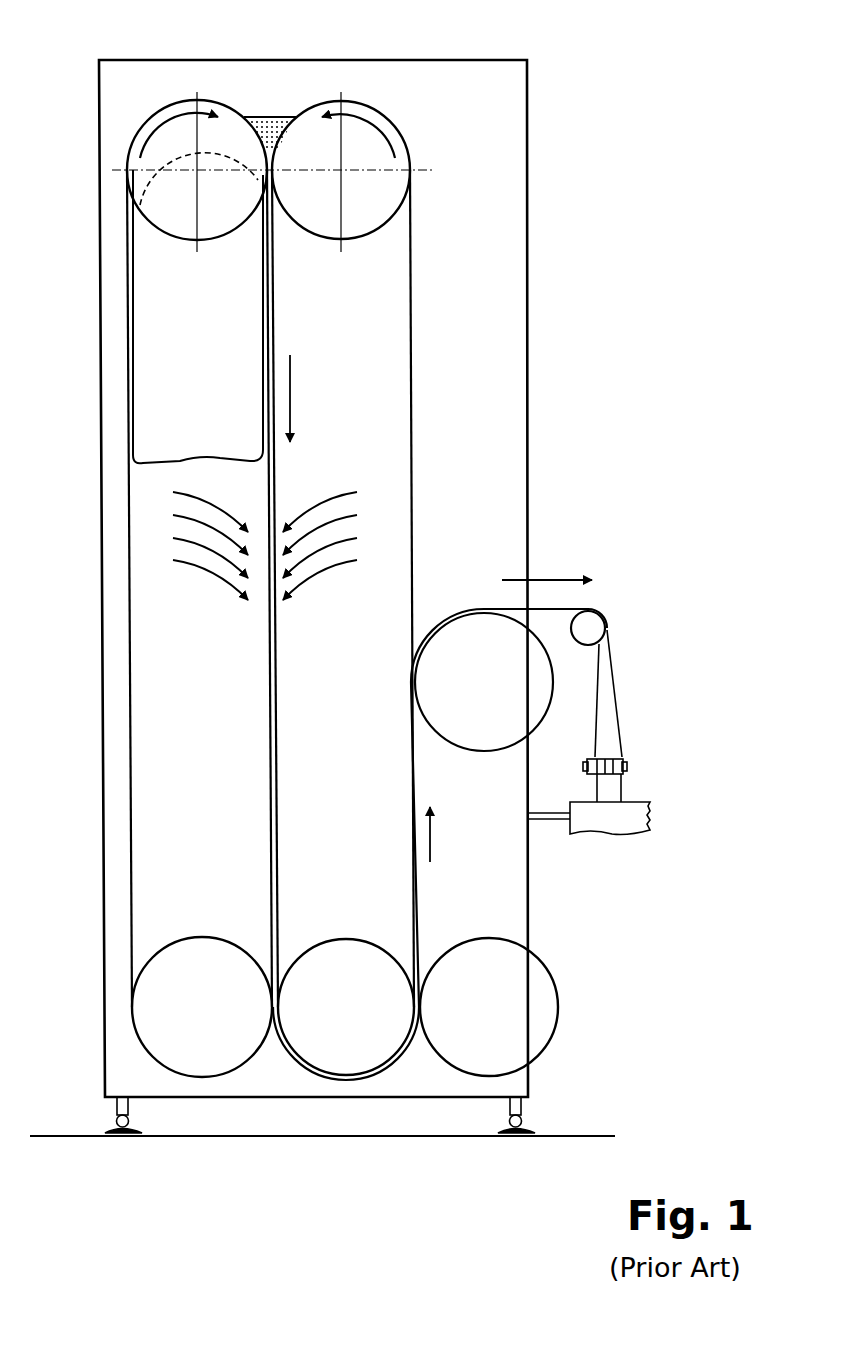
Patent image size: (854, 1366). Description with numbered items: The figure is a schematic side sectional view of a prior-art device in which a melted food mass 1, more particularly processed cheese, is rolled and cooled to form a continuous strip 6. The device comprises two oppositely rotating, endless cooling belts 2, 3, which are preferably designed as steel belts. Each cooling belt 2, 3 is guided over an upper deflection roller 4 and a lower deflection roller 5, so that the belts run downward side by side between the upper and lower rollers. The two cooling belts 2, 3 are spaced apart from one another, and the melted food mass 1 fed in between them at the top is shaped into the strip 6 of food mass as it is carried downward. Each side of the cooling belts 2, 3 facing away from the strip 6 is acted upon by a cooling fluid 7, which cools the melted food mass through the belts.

The melted food mass 1 is at (271, 118).
The cooling belt 2 is at (411, 340).
The cooling belt 3 is at (128, 608).
The upper deflection roller 4 is at (146, 179).
The lower deflection roller 5 is at (153, 1023).
The continuous strip 6 is at (590, 607).
The cooling fluid 7 is at (311, 598).